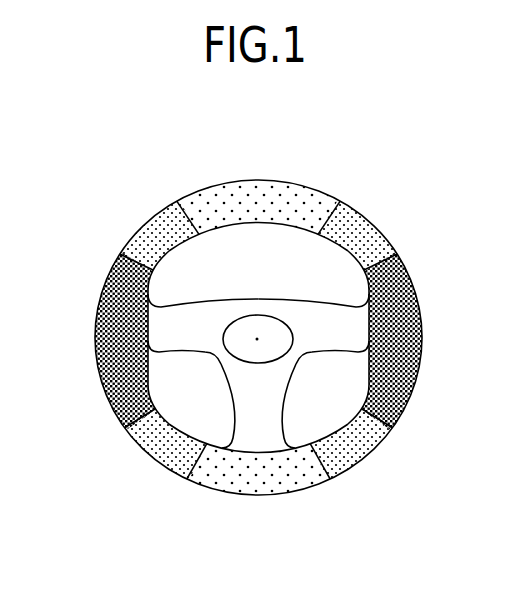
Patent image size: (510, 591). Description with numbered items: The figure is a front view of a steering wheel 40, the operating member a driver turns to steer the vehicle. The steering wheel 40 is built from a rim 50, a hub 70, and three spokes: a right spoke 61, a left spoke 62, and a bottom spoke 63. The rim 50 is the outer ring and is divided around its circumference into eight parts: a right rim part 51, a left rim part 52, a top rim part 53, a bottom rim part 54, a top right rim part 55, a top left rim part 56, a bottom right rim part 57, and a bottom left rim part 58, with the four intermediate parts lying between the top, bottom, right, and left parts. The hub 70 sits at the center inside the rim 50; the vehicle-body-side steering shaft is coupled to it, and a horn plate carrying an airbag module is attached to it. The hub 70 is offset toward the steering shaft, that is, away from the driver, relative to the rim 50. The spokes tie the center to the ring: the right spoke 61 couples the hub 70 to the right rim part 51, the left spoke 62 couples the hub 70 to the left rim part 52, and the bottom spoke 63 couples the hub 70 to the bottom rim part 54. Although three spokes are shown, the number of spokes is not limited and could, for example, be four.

The steering wheel 40 is at (92, 248).
The rim 50 is at (425, 272).
The right rim part 51 is at (410, 340).
The left rim part 52 is at (108, 340).
The top rim part 53 is at (255, 195).
The bottom rim part 54 is at (257, 482).
The top right rim part 55 is at (359, 232).
The top left rim part 56 is at (157, 228).
The bottom right rim part 57 is at (351, 452).
The bottom left rim part 58 is at (163, 454).
The right spoke 61 is at (333, 330).
The left spoke 62 is at (184, 328).
The bottom spoke 63 is at (258, 411).
The hub 70 is at (256, 324).